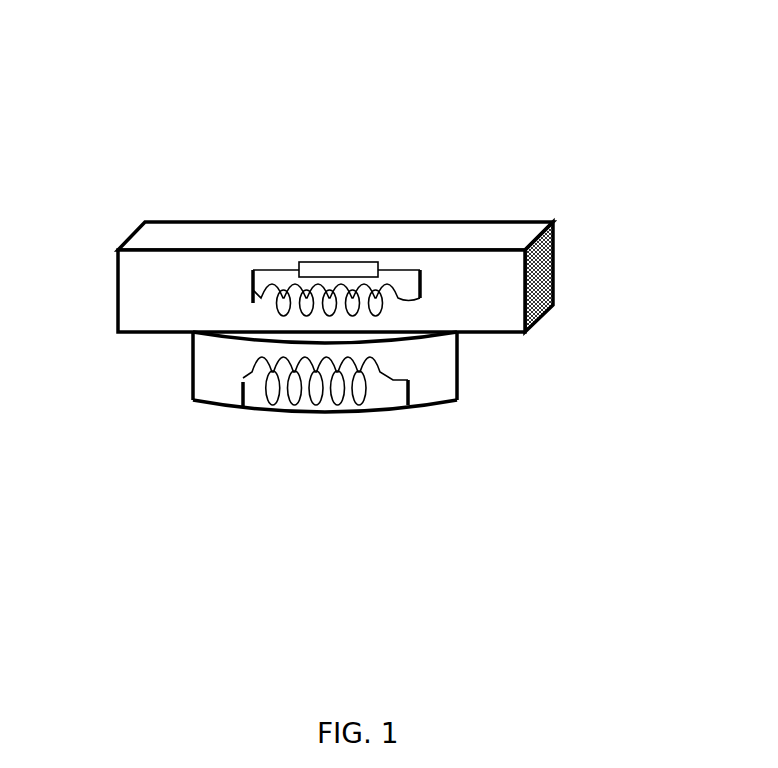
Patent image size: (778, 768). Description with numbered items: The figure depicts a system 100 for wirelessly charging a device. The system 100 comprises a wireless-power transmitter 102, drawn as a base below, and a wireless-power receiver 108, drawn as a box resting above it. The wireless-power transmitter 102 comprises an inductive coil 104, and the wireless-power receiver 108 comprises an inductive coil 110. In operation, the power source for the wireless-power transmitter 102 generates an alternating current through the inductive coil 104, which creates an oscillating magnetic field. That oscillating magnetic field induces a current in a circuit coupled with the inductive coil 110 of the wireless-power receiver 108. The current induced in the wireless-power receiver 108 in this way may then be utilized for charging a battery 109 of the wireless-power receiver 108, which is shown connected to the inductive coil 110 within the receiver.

The system 100 is at (197, 158).
The wireless-power transmitter 102 is at (192, 387).
The inductive coil 104 is at (397, 373).
The wireless-power receiver 108 is at (533, 222).
The battery 109 is at (299, 265).
The inductive coil 110 is at (235, 300).